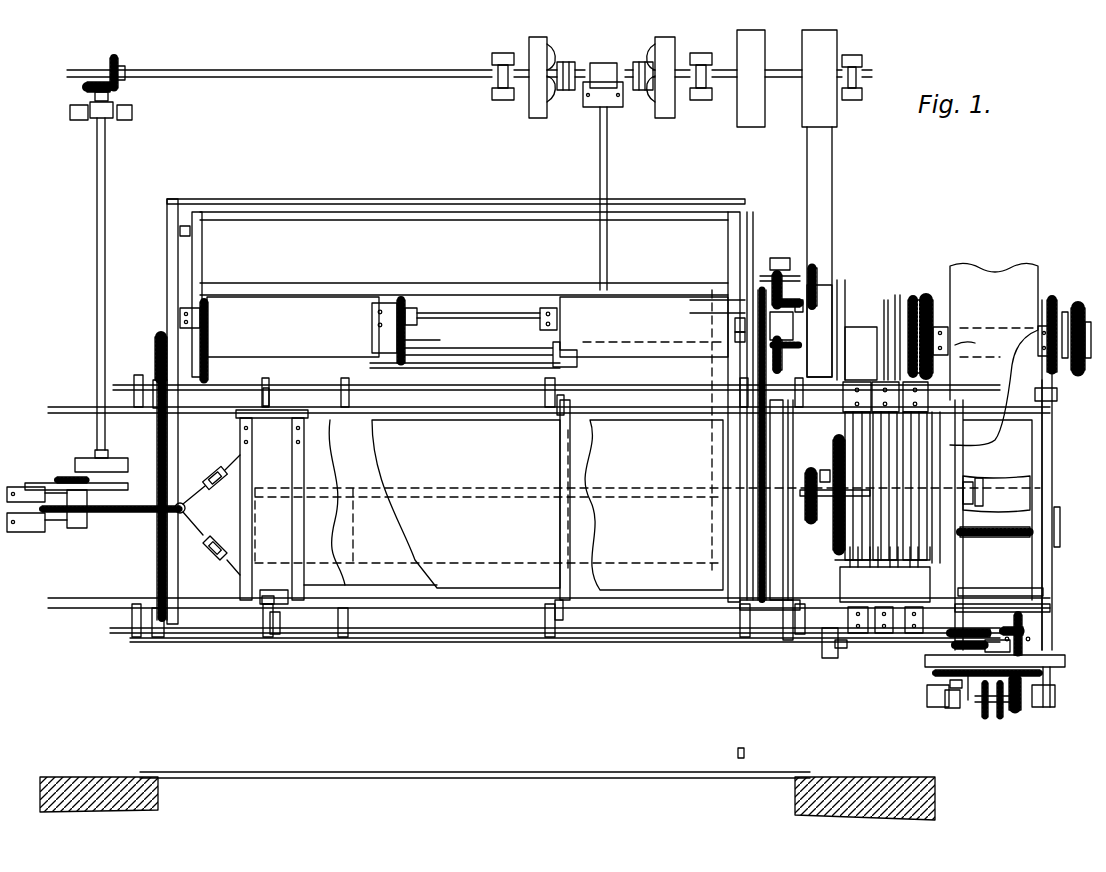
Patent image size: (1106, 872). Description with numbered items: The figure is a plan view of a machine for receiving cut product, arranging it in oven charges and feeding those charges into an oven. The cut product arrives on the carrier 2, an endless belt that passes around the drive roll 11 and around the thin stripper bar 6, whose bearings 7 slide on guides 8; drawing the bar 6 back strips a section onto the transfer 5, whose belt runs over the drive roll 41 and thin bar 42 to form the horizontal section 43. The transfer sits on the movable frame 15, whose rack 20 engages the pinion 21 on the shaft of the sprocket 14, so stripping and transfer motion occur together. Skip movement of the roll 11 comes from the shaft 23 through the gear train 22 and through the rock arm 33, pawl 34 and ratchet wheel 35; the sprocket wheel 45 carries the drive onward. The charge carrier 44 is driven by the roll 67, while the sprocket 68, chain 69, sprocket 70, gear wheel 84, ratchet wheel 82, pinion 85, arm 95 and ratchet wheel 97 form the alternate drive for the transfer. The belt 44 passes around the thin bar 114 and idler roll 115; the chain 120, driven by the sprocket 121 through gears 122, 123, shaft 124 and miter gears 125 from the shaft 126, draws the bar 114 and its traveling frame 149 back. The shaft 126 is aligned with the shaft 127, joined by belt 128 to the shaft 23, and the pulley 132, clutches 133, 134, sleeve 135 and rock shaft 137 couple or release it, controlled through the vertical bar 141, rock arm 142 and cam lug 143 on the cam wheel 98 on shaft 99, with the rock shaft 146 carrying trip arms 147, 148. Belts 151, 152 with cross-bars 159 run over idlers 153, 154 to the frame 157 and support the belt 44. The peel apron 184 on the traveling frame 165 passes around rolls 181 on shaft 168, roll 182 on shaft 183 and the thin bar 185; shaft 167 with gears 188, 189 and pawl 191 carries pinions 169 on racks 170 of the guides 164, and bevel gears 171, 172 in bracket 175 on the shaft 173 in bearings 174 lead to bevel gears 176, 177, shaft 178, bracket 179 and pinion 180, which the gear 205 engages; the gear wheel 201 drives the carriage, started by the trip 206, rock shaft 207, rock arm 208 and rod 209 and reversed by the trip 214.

The miter gear wheels 125 is at (108, 68).
The shaft 126 is at (191, 70).
The shaft 124 is at (99, 302).
The pulley 132 is at (540, 112).
The clutch 133 is at (560, 62).
The clutch 134 is at (648, 60).
The sleeve 135 is at (612, 108).
The rock shaft 137 is at (608, 178).
The shaft 127 is at (783, 80).
The straight belt connection 128 is at (832, 215).
The traveling frame 165 is at (200, 260).
The rolls 181 is at (306, 295).
The gear 189 is at (402, 297).
The pawl 191 is at (418, 314).
The shaft 168 is at (480, 314).
The shaft 167 is at (482, 350).
The gear 188 is at (405, 346).
The roll 182 is at (465, 375).
The shaft 183 is at (286, 380).
The trip arm 148 is at (271, 404).
The rock shaft 146 is at (622, 412).
The pinions 169 is at (154, 340).
The guides 164 is at (168, 304).
The racks 170 is at (150, 568).
The gear 123 is at (118, 458).
The gear 122 is at (60, 473).
The flexible reciprocatory connection 120 is at (122, 522).
The drive sprocket wheel 121 is at (56, 514).
The thin bar 114 is at (240, 442).
The charge carrier 44 is at (583, 506).
The apron or peel 184 is at (470, 504).
The thin bar 185 is at (370, 575).
The gear 205 is at (740, 515).
The trip arm 147 is at (738, 434).
The rock shaft 207 is at (440, 635).
The trip 206 is at (266, 622).
The traveling frame 149 is at (282, 612).
The trip 214 is at (744, 750).
The bevel gear wheel 177 is at (781, 272).
The bevel gear wheel 176 is at (800, 300).
The short shaft 178 is at (816, 266).
The bracket 179 is at (794, 312).
The pinion 180 is at (820, 295).
The bevel gear 172 is at (838, 305).
The vertical bar 141 is at (842, 352).
The shaft 23 is at (842, 325).
The rock arm 142 is at (868, 327).
The cam lug 143 is at (886, 300).
The shaft 99 is at (903, 331).
The cam wheel 98 is at (937, 293).
The gear train 22 is at (934, 292).
The carrier 2 is at (1022, 280).
The drive roll 11 is at (980, 336).
The sprocket wheel 45 is at (1056, 298).
The ratchet wheel 35 is at (1078, 306).
The pawl 34 is at (1066, 360).
The rock arm 33 is at (1056, 397).
The shaft 173 is at (790, 466).
The gear wheel 201 is at (826, 495).
The belt 152 is at (818, 518).
The traveling frame 157 is at (826, 541).
The idler 153 is at (906, 446).
The idler 154 is at (862, 462).
The cross-bars 159 is at (896, 562).
The roll 67 is at (945, 487).
The transfer 5 is at (1038, 452).
The guides 8 is at (1046, 487).
The drive roll 41 is at (996, 494).
The horizontal section 43 is at (995, 518).
The idler roll 115 is at (948, 490).
The thin bar 42 is at (978, 500).
The bearings 7 is at (1054, 548).
The thin plate or bar 6 is at (1044, 586).
The movable frame 15 is at (1030, 606).
The rack 20 is at (1030, 646).
The gear wheel 84 is at (948, 643).
The ratchet wheel 82 is at (952, 655).
The pinion 85 is at (1007, 637).
The sprocket 68 is at (932, 674).
The arm 95 is at (935, 688).
The ratchet wheel 97 is at (960, 690).
The chain 69 is at (976, 688).
The sprocket 14 is at (984, 712).
The pinion 21 is at (1016, 706).
The sprocket 70 is at (1052, 676).
The bearings 174 is at (790, 602).
The belt 151 is at (790, 640).
The vertical rod 209 is at (828, 650).
The rock arm 208 is at (838, 648).
The bracket 175 is at (700, 320).
The bevel gear 171 is at (740, 334).